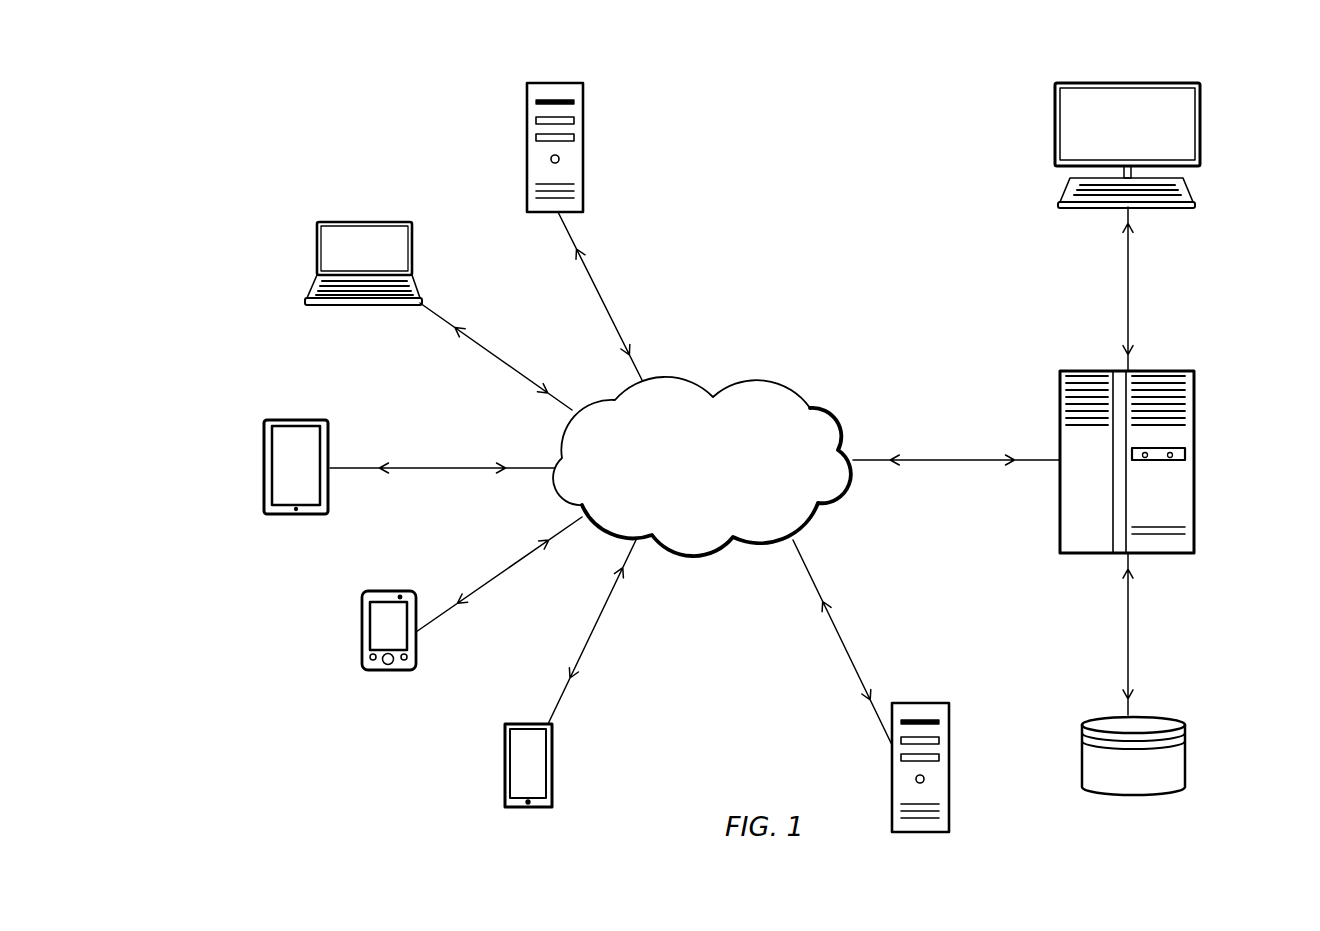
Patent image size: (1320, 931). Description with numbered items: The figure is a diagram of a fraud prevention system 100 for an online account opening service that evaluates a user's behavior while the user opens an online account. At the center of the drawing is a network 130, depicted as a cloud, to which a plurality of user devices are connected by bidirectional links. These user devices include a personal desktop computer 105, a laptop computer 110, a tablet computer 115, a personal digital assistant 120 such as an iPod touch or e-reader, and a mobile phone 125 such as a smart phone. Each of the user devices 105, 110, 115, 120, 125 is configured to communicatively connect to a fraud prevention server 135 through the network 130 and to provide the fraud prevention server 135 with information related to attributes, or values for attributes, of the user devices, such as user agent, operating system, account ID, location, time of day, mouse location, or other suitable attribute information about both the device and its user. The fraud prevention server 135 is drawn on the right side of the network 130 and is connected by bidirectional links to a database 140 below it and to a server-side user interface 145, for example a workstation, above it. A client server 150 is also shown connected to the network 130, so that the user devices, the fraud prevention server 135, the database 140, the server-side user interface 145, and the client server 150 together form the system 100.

The fraud prevention system 100 is at (314, 85).
The personal desktop computer 105 is at (510, 147).
The laptop computer 110 is at (323, 249).
The tablet computer 115 is at (253, 461).
The personal digital assistant 120 is at (343, 622).
The mobile phone 125 is at (482, 754).
The network 130 is at (710, 440).
The fraud prevention server 135 is at (1173, 462).
The database 140 is at (1180, 745).
The server-side user interface 145 is at (1174, 138).
The client server 150 is at (967, 753).